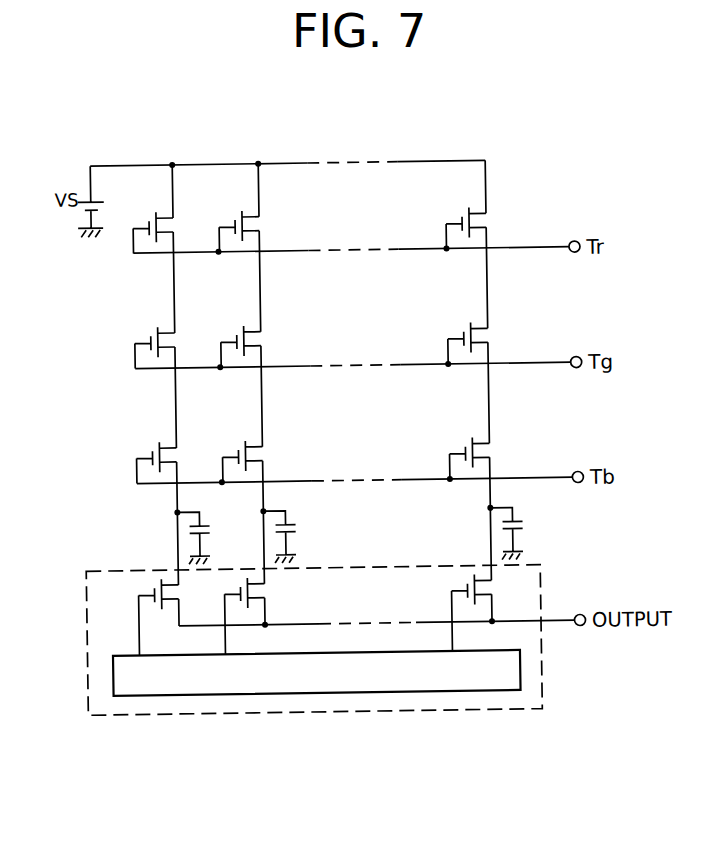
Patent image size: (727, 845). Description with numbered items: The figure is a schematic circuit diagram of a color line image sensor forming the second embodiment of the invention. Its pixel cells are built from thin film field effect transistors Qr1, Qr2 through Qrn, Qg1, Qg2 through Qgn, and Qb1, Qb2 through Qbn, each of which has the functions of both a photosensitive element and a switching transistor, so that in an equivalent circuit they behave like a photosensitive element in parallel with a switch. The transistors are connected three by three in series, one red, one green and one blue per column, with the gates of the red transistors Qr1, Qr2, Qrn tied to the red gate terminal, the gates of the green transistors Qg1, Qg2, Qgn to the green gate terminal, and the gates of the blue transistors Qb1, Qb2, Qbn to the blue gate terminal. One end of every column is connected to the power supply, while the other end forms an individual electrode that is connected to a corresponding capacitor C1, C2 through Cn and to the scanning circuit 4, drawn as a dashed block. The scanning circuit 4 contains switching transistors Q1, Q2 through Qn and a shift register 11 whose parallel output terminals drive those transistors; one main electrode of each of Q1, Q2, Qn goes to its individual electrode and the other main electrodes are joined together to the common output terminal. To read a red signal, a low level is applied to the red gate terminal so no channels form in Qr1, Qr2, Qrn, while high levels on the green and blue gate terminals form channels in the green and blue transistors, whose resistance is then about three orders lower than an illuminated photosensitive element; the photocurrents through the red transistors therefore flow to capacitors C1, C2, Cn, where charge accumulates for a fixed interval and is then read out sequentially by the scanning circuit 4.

The scanning circuit 4 is at (314, 667).
The shift register 11 is at (388, 695).
The thin film field effect transistor Qr1 is at (153, 219).
The thin film field effect transistor Qr2 is at (235, 218).
The thin film field effect transistor Qrn is at (460, 214).
The thin film field effect transistor Qg1 is at (153, 331).
The thin film field effect transistor Qg2 is at (235, 330).
The thin film field effect transistor Qgn is at (461, 326).
The thin film field effect transistor Qb1 is at (156, 451).
The thin film field effect transistor Qb2 is at (240, 450).
The thin film field effect transistor Qbn is at (463, 446).
The capacitor C1 is at (206, 538).
The capacitor C2 is at (294, 536).
The capacitor Cn is at (522, 533).
The switching transistor Q1 is at (158, 617).
The switching transistor Q2 is at (260, 615).
The switching transistor Qn is at (487, 612).